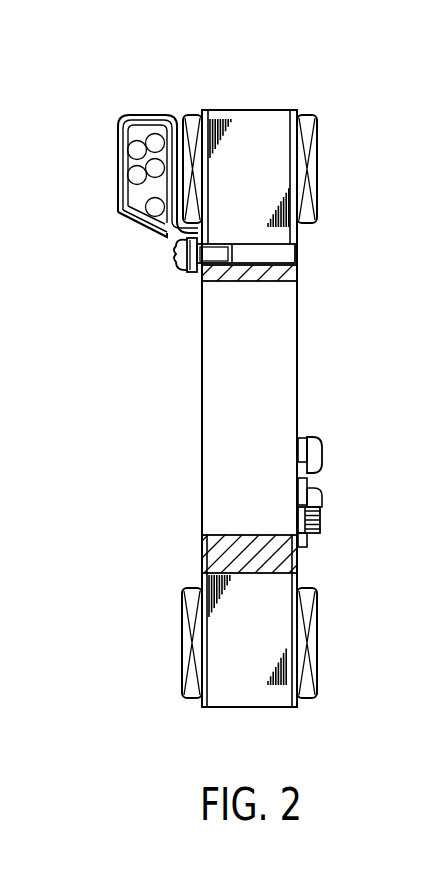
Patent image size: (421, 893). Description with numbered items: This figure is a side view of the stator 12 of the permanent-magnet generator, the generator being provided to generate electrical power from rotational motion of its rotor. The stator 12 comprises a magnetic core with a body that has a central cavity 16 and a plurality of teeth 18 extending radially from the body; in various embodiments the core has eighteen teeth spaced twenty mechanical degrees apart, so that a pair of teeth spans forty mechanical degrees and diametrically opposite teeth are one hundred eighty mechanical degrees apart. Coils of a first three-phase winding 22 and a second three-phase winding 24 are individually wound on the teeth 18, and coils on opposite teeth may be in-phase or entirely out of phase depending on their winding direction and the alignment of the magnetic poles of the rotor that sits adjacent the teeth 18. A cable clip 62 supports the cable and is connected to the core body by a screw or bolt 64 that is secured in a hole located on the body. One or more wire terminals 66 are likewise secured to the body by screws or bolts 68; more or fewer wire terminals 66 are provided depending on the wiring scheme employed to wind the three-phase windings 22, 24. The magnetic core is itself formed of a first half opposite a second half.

The stator 12 is at (92, 103).
The central cavity 16 is at (213, 467).
The teeth 18 is at (227, 698).
The first three-phase winding 22 is at (182, 648).
The second three-phase winding 24 is at (249, 406).
The cable clip 62 is at (120, 210).
The screw or bolt 64 is at (182, 272).
The wire terminals 66 is at (322, 520).
The screws or bolts 68 is at (322, 452).